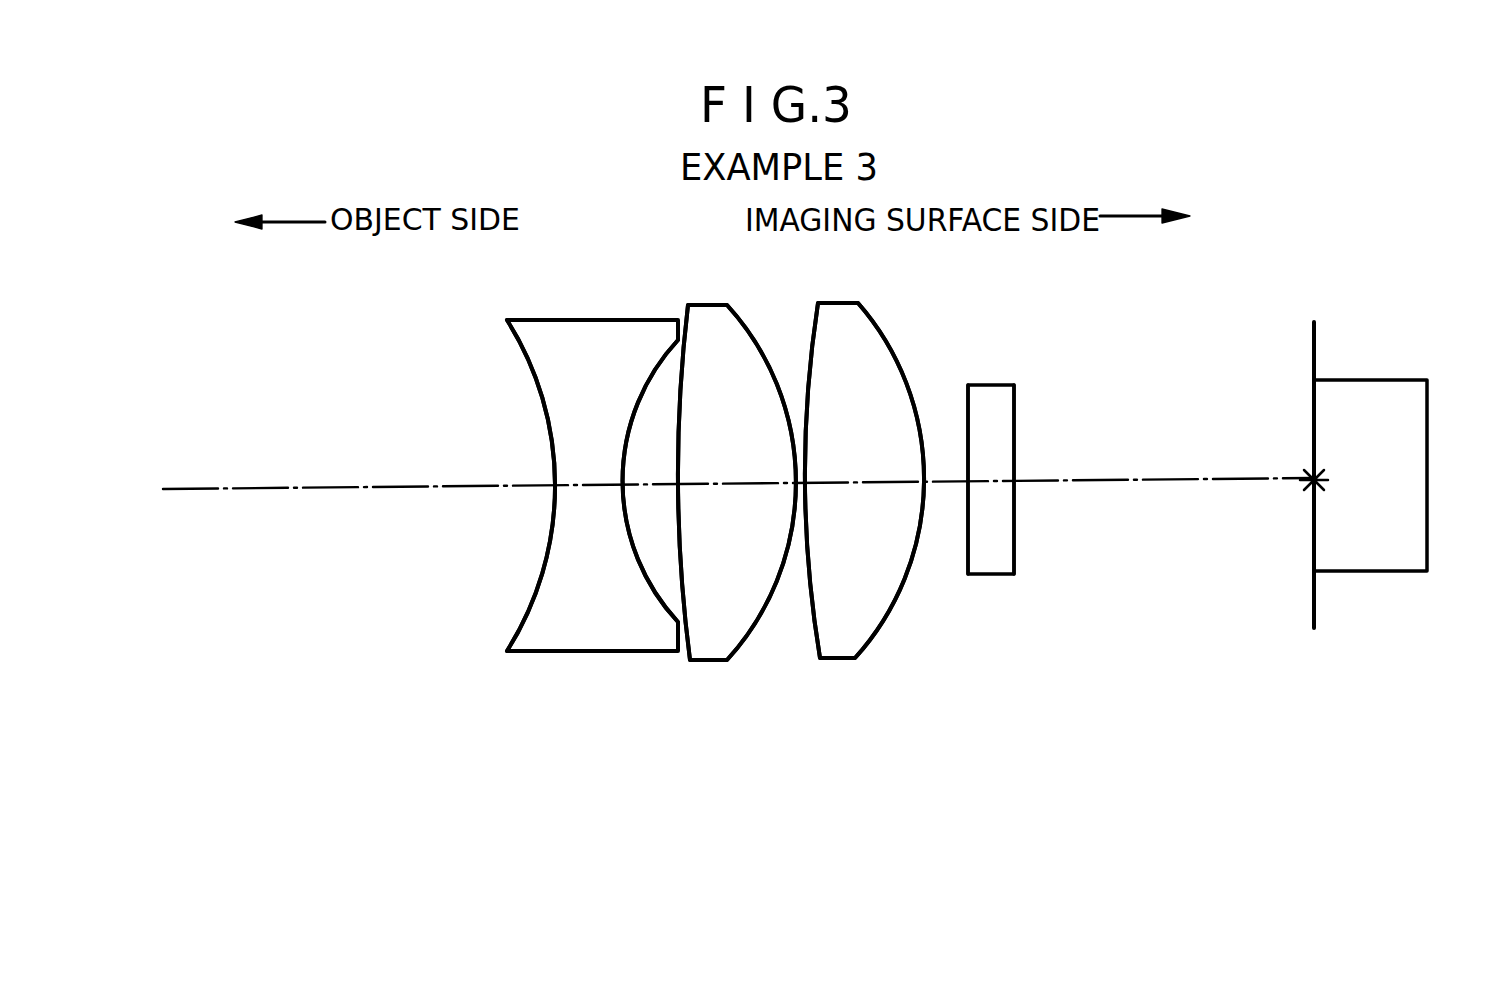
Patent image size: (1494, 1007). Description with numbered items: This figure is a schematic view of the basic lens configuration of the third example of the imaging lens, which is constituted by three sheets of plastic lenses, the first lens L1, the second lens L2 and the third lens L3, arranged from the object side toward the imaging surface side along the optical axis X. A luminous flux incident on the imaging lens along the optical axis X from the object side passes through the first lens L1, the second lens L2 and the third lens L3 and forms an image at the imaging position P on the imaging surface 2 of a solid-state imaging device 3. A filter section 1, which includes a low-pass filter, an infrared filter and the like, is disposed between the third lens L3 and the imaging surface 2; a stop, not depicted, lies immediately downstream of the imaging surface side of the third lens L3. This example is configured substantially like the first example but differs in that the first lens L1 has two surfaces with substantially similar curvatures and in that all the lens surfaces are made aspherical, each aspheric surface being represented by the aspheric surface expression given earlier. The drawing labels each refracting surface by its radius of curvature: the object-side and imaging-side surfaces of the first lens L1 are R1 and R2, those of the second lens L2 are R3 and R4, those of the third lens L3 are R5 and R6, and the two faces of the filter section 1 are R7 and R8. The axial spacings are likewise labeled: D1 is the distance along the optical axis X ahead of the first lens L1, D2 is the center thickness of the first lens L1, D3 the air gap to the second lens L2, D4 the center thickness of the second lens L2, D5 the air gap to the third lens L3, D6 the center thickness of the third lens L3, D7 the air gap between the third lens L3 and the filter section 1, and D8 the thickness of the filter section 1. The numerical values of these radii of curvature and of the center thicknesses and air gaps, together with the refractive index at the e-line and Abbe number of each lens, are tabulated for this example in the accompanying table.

The optical axis X is at (270, 488).
The first lens L1 is at (565, 484).
The second lens L2 is at (735, 487).
The third lens L3 is at (870, 486).
The radius of curvature of first lens object-side surface R1 is at (518, 340).
The radius of curvature of first lens imaging-side surface R2 is at (660, 380).
The radius of curvature of second lens object-side surface R3 is at (682, 400).
The radius of curvature of second lens imaging-side surface R4 is at (752, 335).
The radius of curvature of third lens object-side surface R5 is at (818, 333).
The radius of curvature of third lens imaging-side surface R6 is at (886, 340).
The radius of curvature of filter section object-side surface R7 is at (966, 400).
The radius of curvature of filter section imaging-side surface R8 is at (1018, 402).
The axial distance in front of first lens D1 is at (456, 486).
The center thickness of first lens D2 is at (576, 486).
The air gap between first and second lenses D3 is at (644, 486).
The center thickness of second lens D4 is at (716, 486).
The air gap between second and third lenses D5 is at (806, 480).
The center thickness of third lens D6 is at (878, 484).
The air gap between third lens and filter section D7 is at (954, 482).
The thickness of filter section D8 is at (988, 482).
The filter section 1 is at (1009, 480).
The imaging surface 2 is at (1314, 384).
The solid-state imaging device 3 is at (1418, 407).
The imaging position P is at (1322, 481).